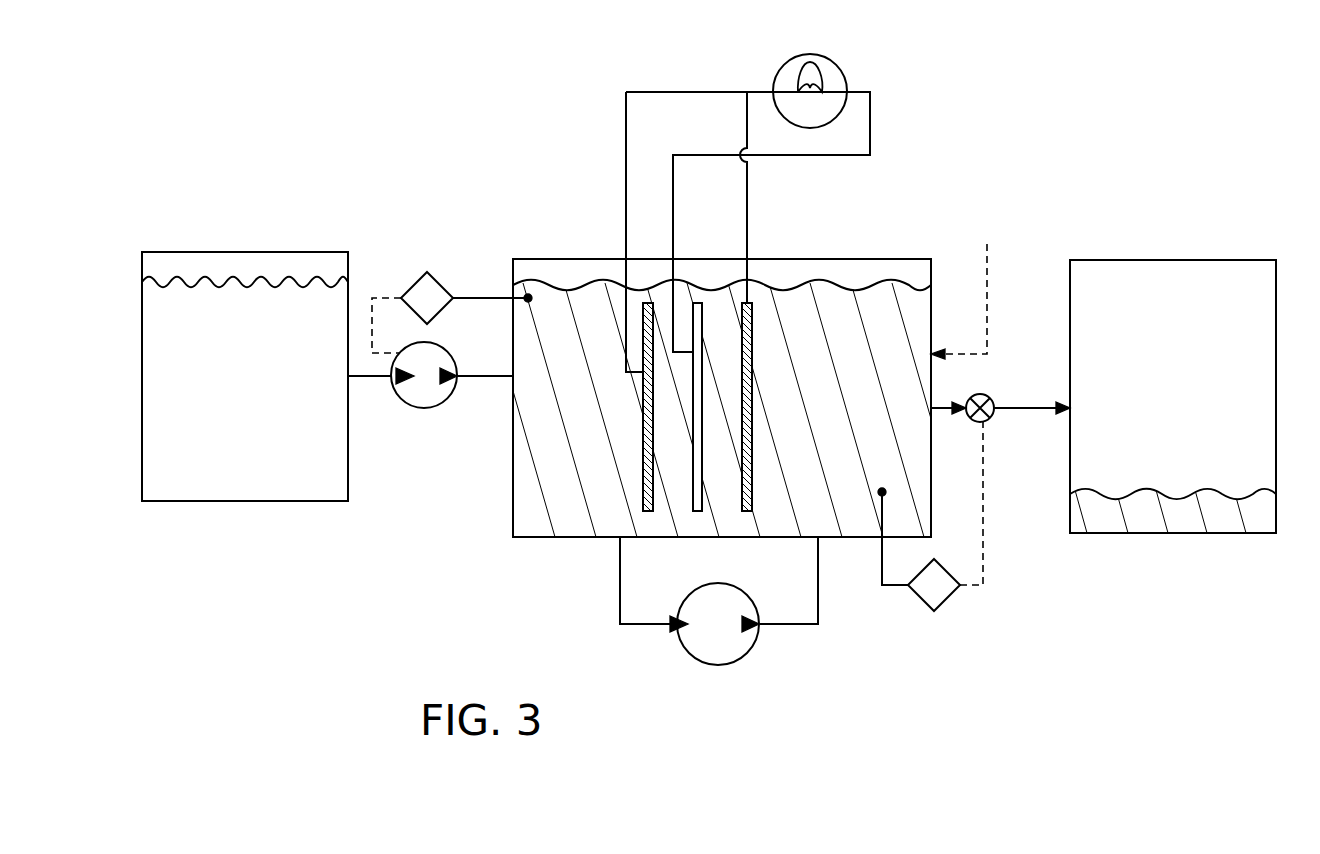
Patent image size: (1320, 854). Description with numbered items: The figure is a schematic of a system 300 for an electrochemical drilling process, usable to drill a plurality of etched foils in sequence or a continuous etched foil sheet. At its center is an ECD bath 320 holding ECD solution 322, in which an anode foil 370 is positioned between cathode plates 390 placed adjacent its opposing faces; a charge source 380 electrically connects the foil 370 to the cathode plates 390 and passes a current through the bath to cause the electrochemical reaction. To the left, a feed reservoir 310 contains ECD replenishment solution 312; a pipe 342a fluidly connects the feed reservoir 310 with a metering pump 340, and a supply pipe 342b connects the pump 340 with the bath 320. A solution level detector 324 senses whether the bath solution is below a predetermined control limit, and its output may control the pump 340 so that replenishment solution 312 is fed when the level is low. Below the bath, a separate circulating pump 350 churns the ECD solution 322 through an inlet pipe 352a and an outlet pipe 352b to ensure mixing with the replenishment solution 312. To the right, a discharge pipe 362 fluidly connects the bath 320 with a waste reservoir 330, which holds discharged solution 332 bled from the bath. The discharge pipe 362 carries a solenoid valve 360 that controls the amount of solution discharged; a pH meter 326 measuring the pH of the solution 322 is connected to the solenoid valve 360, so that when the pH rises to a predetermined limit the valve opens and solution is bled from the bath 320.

The system 300 is at (334, 114).
The feed reservoir 310 is at (268, 250).
The ECD replenishment solution 312 is at (210, 477).
The ECD bath 320 is at (815, 258).
The ECD solution 322 is at (535, 537).
The solution level detector 324 is at (420, 283).
The pH meter 326 is at (945, 610).
The waste reservoir 330 is at (1148, 258).
The discharged solution 332 is at (1142, 522).
The metering pump 340 is at (423, 408).
The pipe 342a is at (375, 380).
The supply pipe 342b is at (480, 380).
The circulating pump 350 is at (733, 662).
The inlet pipe 352a is at (620, 612).
The outlet pipe 352b is at (818, 598).
The solenoid valve 360 is at (990, 422).
The discharge pipe 362 is at (1018, 405).
The anode foil 370 is at (702, 415).
The charge source 380 is at (790, 62).
The cathode plates 390 is at (652, 482).